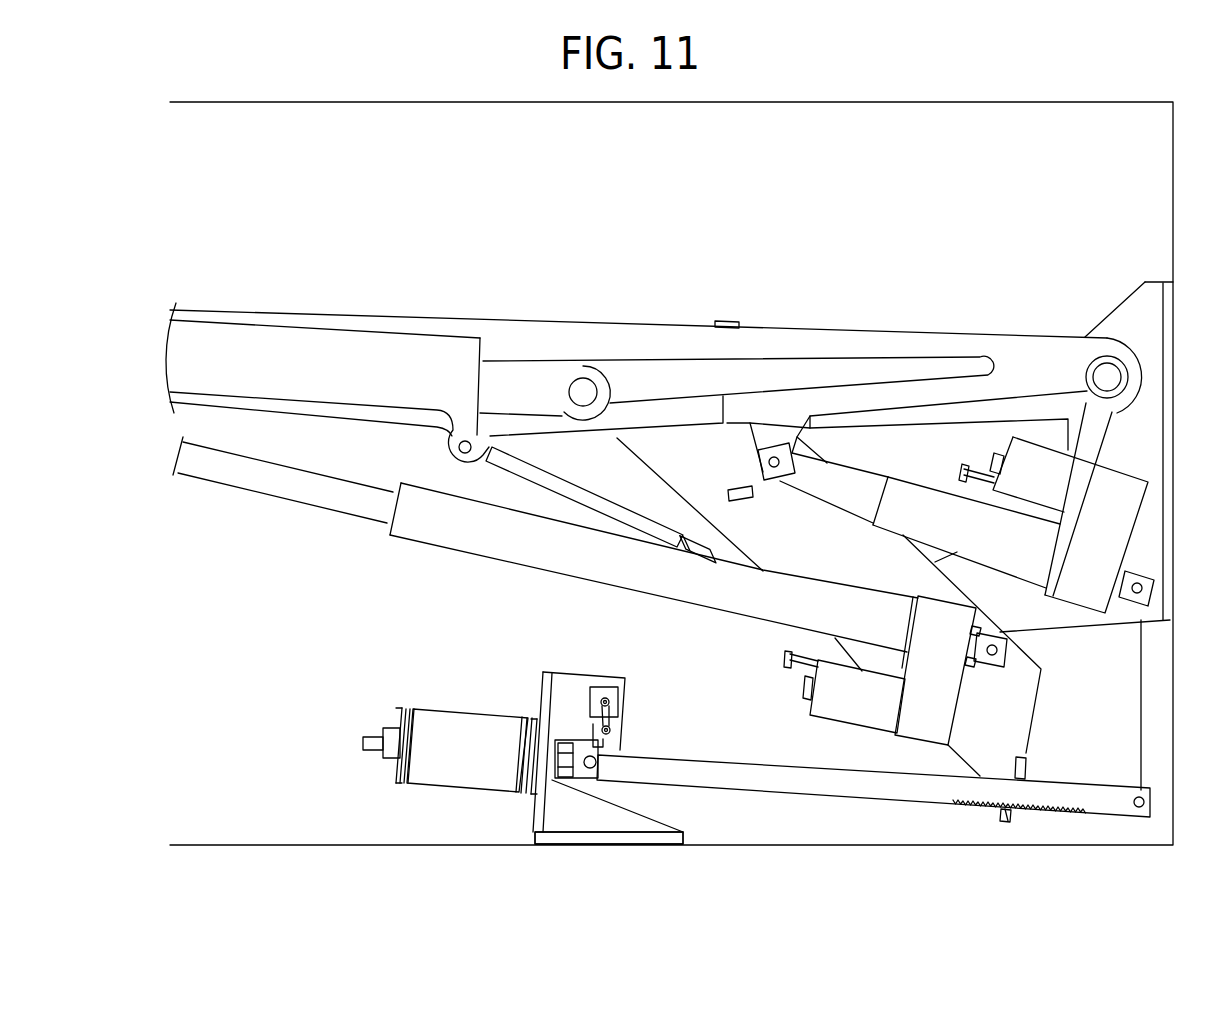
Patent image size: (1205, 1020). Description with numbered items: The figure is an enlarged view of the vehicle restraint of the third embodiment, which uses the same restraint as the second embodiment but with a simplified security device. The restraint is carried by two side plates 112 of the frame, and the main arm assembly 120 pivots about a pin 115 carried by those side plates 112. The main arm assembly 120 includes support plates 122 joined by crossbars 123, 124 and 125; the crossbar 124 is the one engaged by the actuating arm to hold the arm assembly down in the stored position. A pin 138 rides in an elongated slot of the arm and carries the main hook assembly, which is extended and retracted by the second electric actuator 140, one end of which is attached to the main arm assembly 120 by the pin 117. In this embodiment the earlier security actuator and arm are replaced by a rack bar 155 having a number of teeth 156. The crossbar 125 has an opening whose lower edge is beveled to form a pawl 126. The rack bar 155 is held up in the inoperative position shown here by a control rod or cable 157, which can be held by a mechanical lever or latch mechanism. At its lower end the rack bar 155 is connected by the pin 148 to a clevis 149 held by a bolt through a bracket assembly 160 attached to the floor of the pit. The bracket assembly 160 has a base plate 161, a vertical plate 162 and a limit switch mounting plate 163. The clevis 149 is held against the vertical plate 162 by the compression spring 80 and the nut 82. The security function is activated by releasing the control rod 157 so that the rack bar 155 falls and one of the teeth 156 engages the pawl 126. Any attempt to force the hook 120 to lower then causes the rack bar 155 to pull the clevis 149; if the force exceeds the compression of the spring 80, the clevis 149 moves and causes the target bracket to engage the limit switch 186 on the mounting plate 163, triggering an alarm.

The compression spring 80 is at (495, 710).
The nut 82 is at (387, 760).
The side plates 112 is at (1107, 312).
The pin 115 is at (1083, 338).
The pin 117 is at (1041, 666).
The main arm assembly 120 is at (493, 318).
The support plates 122 is at (640, 455).
The crossbar 123 is at (735, 322).
The crossbar 124 is at (745, 490).
The crossbar 125 is at (1001, 815).
The pawl 126 is at (1013, 812).
The pin 138 is at (585, 390).
The second electric actuator 140 is at (493, 568).
The pin 148 is at (600, 757).
The clevis 149 is at (615, 782).
The rack bar 155 is at (770, 787).
The teeth 156 is at (1063, 813).
The control rod or cable 157 is at (1141, 760).
The bracket assembly 160 is at (565, 833).
The base plate 161 is at (609, 838).
The vertical plate 162 is at (537, 820).
The limit switch mounting plate 163 is at (618, 703).
The limit switch 186 is at (598, 688).